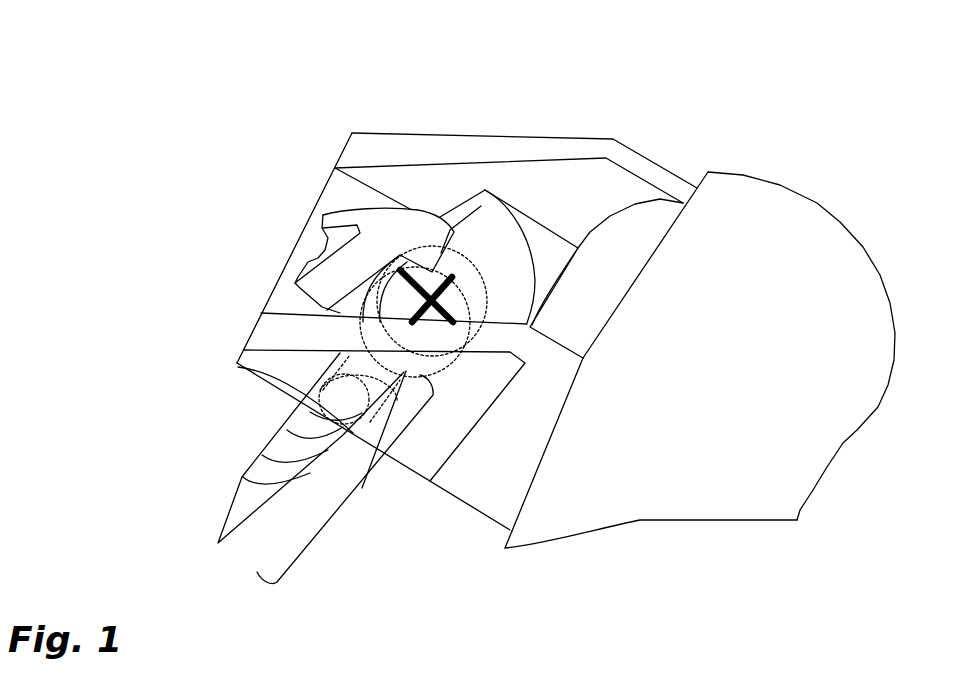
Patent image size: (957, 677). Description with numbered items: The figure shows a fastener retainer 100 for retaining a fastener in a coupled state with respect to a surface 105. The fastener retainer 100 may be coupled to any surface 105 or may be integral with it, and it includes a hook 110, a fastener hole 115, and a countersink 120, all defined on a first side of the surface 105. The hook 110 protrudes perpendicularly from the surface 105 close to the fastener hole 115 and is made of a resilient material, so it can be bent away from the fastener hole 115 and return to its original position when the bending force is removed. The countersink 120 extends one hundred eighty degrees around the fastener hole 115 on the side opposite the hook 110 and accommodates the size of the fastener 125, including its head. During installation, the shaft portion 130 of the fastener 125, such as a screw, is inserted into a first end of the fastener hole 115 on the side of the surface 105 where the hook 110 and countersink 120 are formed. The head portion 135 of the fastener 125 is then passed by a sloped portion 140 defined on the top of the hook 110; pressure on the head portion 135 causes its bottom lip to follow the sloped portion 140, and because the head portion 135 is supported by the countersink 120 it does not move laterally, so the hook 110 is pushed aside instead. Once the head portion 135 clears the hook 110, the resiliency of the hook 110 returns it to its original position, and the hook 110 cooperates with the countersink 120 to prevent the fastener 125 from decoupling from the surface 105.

The fastener retainer 100 is at (189, 90).
The surface 105 is at (808, 250).
The hook 110 is at (358, 230).
The fastener hole 115 is at (237, 366).
The countersink 120 is at (498, 240).
The fastener 125 is at (346, 309).
The shaft portion 130 is at (359, 490).
The head portion 135 is at (490, 285).
The sloped portion 140 is at (423, 237).